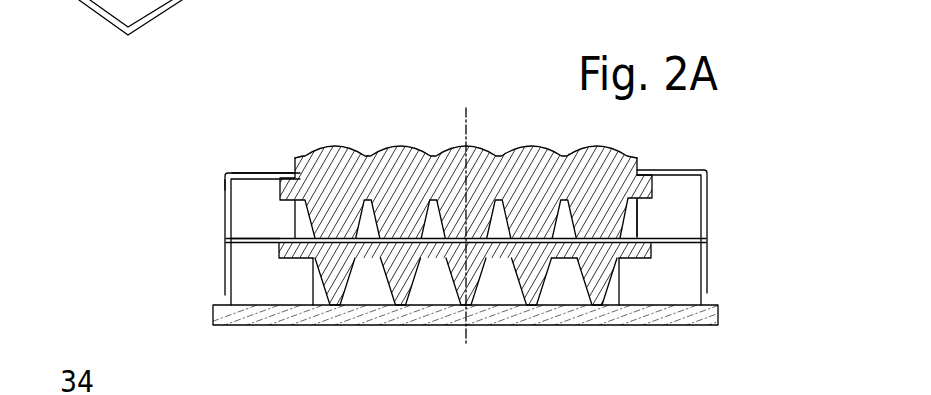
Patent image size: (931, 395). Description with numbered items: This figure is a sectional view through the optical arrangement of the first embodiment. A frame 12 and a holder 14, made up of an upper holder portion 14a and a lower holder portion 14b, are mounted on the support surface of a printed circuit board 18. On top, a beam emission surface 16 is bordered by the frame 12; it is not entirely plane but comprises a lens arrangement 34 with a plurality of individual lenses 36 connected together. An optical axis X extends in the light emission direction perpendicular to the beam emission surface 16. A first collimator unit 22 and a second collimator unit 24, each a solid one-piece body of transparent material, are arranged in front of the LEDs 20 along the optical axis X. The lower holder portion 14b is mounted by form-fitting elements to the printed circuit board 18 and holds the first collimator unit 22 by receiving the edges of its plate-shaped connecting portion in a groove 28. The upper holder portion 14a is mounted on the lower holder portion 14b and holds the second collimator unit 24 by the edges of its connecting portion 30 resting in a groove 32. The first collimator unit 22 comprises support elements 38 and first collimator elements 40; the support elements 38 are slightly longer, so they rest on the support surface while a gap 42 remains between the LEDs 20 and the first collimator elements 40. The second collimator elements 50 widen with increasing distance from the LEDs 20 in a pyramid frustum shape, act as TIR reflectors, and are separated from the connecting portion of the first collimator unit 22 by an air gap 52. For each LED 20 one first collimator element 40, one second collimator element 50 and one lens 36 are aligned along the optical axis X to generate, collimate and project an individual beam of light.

The frame 12 is at (252, 173).
The holder 14 is at (92, 183).
The upper holder portion 14a is at (230, 207).
The lower holder portion 14b is at (233, 255).
The beam emission surface 16 is at (444, 149).
The printed circuit board 18 is at (277, 318).
The LEDs 20 is at (400, 306).
The first collimator unit 22 is at (197, 312).
The second collimator unit 24 is at (214, 184).
The groove 28 is at (653, 250).
The connecting portion 30 is at (638, 167).
The groove 32 is at (268, 172).
The lens arrangement 34 is at (498, 131).
The individual lenses 36 is at (573, 150).
The support elements 38 is at (572, 295).
The first collimator elements 40 is at (607, 287).
The gap 42 is at (533, 306).
The second collimator elements 50 is at (333, 170).
The air gap 52 is at (622, 238).
The optical axis X is at (480, 242).